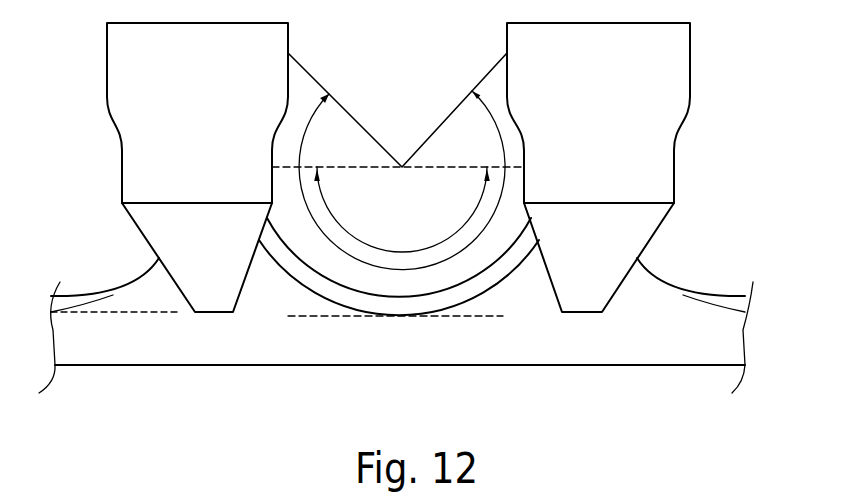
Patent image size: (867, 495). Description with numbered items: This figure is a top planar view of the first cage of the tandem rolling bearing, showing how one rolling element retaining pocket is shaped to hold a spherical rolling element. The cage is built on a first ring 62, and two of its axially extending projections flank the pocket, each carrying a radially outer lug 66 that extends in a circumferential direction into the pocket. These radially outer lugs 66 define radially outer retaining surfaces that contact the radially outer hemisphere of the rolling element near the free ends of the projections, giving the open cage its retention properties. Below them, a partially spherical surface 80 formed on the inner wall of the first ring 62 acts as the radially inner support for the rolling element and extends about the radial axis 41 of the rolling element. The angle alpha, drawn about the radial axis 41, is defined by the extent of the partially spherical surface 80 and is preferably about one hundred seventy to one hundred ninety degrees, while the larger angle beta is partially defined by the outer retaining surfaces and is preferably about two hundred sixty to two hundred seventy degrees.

The radial axis 41 is at (402, 167).
The first ring 62 is at (693, 348).
The radially outer lugs 66 is at (672, 53).
The partially spherical surface 80 is at (287, 256).